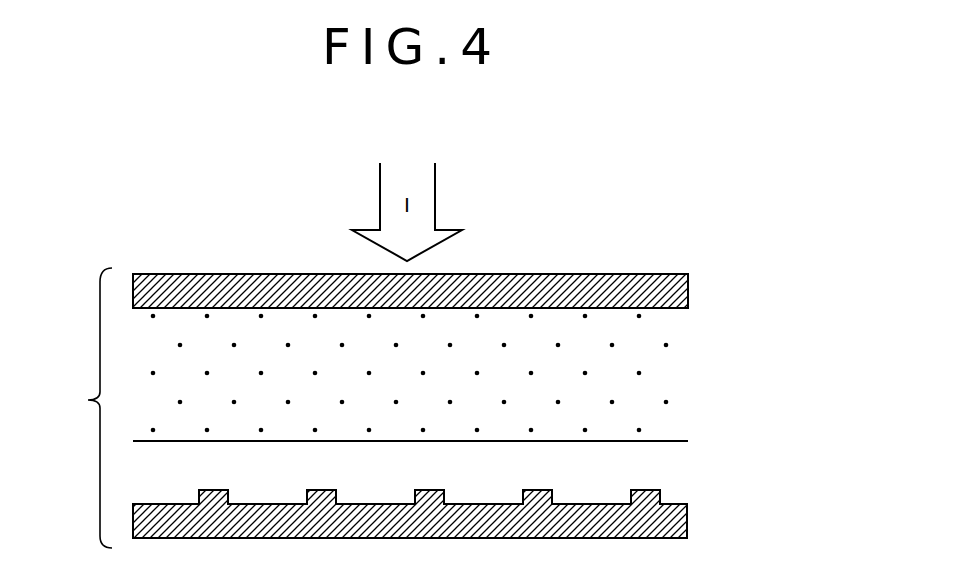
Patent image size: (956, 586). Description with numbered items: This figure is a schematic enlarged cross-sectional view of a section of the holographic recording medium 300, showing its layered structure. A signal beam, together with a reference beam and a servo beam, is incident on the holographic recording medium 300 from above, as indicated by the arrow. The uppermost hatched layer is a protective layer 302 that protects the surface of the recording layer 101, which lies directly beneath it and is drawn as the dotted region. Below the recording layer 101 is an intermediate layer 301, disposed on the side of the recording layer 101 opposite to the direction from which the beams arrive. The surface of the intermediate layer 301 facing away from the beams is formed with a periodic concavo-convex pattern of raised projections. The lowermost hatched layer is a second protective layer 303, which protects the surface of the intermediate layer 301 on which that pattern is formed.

The holographic recording medium 300 is at (62, 408).
The protective layer 302 is at (690, 291).
The recording layer 101 is at (668, 371).
The intermediate layer 301 is at (668, 463).
The protective layer 303 is at (684, 521).